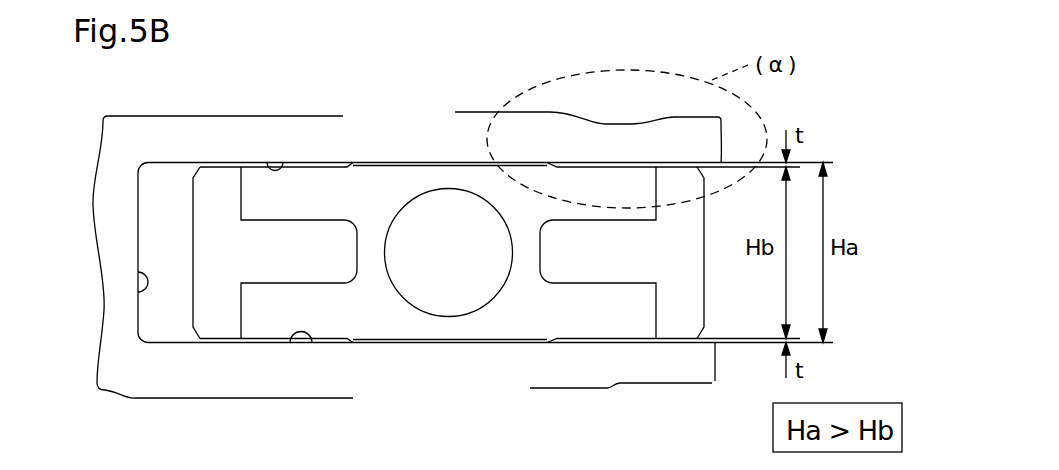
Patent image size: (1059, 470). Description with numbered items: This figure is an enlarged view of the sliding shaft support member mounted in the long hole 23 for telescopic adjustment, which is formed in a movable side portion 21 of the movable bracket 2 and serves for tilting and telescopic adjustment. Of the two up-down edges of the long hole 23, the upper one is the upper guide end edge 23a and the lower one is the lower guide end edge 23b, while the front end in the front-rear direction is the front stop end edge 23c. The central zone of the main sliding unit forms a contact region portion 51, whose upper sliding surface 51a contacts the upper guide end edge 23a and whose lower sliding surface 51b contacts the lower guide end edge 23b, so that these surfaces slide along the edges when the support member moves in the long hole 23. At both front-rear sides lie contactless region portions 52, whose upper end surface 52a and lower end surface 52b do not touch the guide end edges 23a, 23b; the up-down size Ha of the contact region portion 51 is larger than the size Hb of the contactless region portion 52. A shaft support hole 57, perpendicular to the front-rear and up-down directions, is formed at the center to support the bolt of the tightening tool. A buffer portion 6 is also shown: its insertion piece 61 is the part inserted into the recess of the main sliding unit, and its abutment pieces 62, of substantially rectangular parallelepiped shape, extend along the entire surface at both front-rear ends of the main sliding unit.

The movable bracket 2 is at (399, 270).
The movable side portion 21 is at (291, 124).
The long hole for telescopic adjustment 23 is at (160, 324).
The upper guide end edge 23a is at (268, 165).
The lower guide end edge 23b is at (312, 342).
The front stop end edge 23c is at (138, 292).
The contact region portion 51 is at (472, 162).
The upper sliding surface 51a is at (432, 163).
The lower sliding surface 51b is at (418, 343).
The contactless region portion 52 is at (600, 163).
The upper end surface 52a is at (255, 163).
The lower end surface 52b is at (263, 342).
The shaft support hole 57 is at (450, 262).
The buffer portion 6 is at (450, 236).
The insertion piece 61 is at (307, 253).
The abutment piece 62 is at (198, 176).